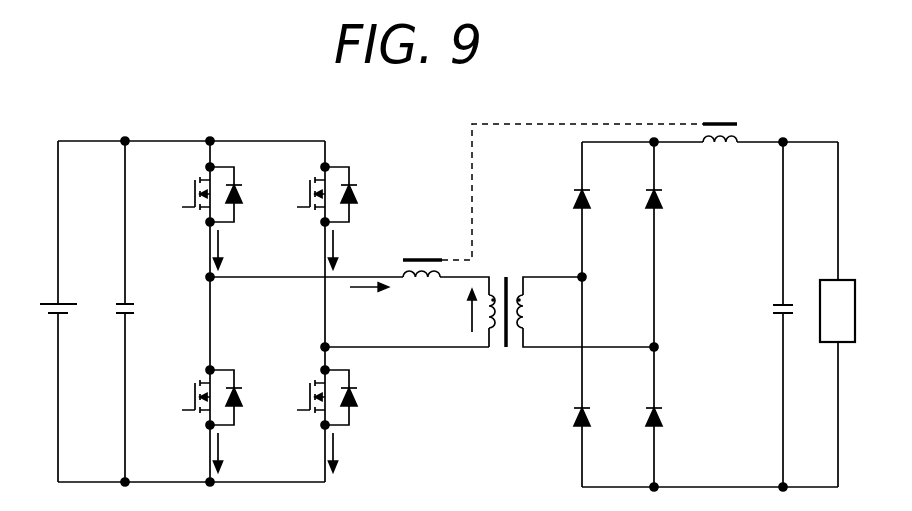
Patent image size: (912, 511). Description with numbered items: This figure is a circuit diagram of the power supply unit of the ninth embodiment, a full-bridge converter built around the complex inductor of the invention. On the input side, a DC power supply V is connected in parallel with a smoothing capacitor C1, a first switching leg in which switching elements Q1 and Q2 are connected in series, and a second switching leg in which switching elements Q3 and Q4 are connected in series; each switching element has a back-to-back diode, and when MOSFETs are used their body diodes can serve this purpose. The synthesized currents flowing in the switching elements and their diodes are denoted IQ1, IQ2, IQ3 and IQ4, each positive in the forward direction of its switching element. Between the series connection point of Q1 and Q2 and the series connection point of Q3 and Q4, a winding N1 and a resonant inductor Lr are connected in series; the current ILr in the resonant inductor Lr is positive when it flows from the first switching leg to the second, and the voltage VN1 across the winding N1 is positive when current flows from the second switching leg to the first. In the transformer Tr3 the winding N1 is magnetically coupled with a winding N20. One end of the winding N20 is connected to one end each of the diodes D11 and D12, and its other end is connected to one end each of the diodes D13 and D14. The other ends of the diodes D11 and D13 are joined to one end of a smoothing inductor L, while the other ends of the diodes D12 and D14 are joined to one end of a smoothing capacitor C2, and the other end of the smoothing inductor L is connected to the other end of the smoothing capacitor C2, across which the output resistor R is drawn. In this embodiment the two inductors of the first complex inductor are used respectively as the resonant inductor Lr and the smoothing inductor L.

The DC power supply V is at (48, 311).
The smoothing capacitor C1 is at (140, 311).
The switching element Q1 is at (197, 194).
The switching element Q2 is at (197, 397).
The switching element Q3 is at (312, 194).
The switching element Q4 is at (312, 397).
The synthesized current in switching element Q1 IQ1 is at (237, 249).
The synthesized current in switching element Q2 IQ2 is at (237, 452).
The synthesized current in switching element Q3 IQ3 is at (352, 249).
The synthesized current in switching element Q4 IQ4 is at (352, 452).
The resonant inductor Lr is at (405, 257).
The current in the resonant inductor ILr is at (369, 300).
The transformer Tr3 is at (506, 275).
The winding N1 is at (489, 349).
The winding N20 is at (523, 349).
The voltage across the winding N1 VN1 is at (451, 310).
The diode D11 is at (561, 201).
The diode D12 is at (560, 420).
The diode D13 is at (632, 201).
The diode D14 is at (632, 420).
The smoothing inductor L is at (720, 148).
The smoothing capacitor C2 is at (767, 311).
The load resistor R is at (847, 311).